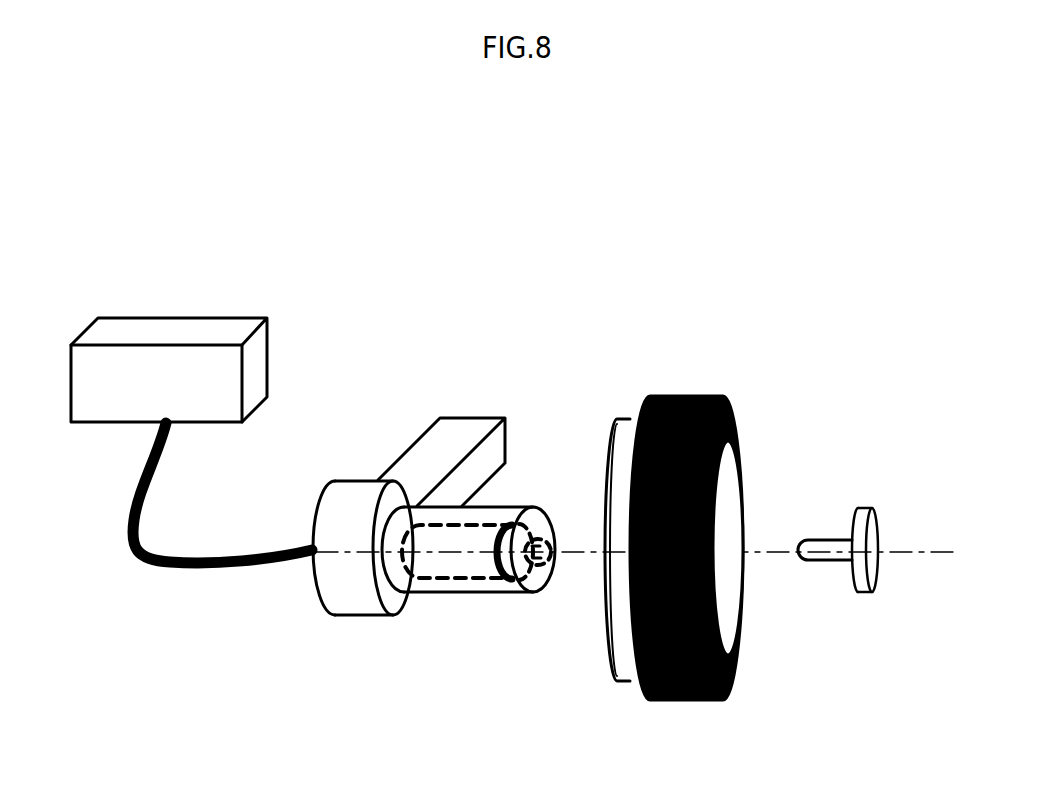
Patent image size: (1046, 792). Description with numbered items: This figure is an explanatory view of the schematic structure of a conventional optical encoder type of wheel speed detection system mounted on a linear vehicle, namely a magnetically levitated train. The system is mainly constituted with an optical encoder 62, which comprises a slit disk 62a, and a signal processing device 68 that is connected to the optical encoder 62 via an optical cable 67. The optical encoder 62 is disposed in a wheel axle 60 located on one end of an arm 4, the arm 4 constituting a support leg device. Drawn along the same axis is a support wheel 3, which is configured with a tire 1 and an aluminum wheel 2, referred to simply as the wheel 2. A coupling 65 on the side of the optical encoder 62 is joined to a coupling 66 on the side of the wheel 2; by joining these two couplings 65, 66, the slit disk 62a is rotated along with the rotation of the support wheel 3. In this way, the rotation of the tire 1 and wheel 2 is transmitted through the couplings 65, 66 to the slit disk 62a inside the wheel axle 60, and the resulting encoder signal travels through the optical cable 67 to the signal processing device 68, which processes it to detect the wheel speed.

The tire 1 is at (735, 433).
The aluminum wheel 2 is at (731, 505).
The support wheel 3 is at (726, 542).
The arm 4 is at (459, 426).
The wheel axle 60 is at (510, 506).
The optical encoder 62 is at (443, 565).
The slit disk 62a is at (488, 557).
The coupling 65 is at (538, 564).
The coupling 66 is at (860, 593).
The optical cable 67 is at (138, 553).
The signal processing device 68 is at (141, 318).